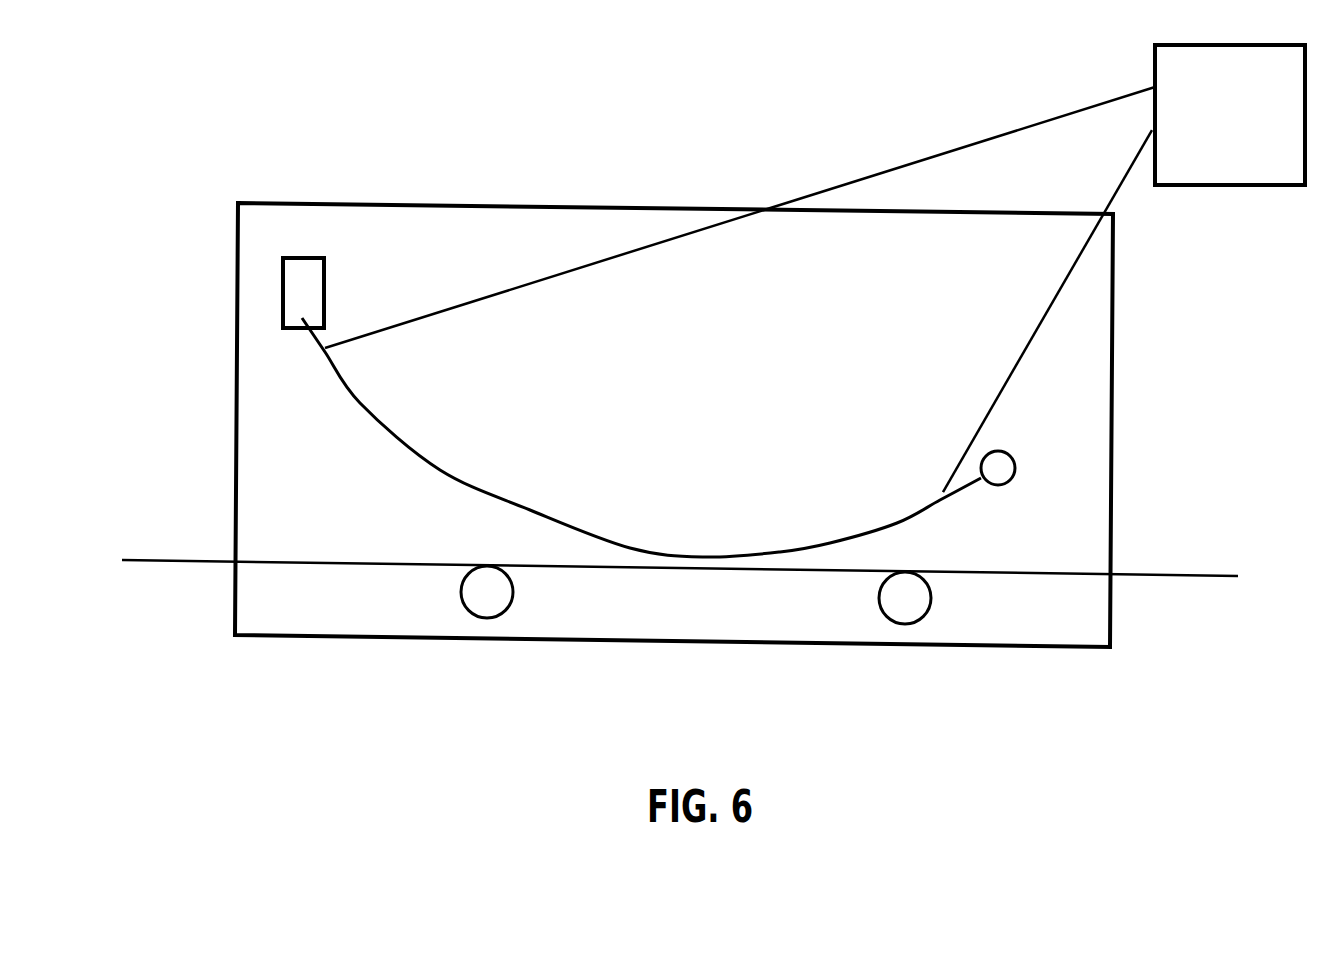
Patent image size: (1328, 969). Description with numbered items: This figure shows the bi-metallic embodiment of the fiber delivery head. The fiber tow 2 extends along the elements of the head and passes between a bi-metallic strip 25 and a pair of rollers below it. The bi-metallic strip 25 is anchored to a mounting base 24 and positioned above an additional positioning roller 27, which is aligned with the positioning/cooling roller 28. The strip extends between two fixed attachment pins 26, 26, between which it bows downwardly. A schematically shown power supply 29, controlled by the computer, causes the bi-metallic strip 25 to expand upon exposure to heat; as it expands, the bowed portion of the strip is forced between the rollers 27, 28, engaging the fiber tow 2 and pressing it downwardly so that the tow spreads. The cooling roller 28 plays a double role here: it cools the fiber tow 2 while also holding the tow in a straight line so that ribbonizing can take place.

The fiber tow 2 is at (1163, 577).
The mounting base 24 is at (450, 204).
The bi-metallic strip 25 is at (360, 403).
The fixed attachment pins 26 is at (295, 288).
The positioning roller 27 is at (488, 593).
The positioning/cooling roller 28 is at (903, 597).
The power supply 29 is at (1245, 145).